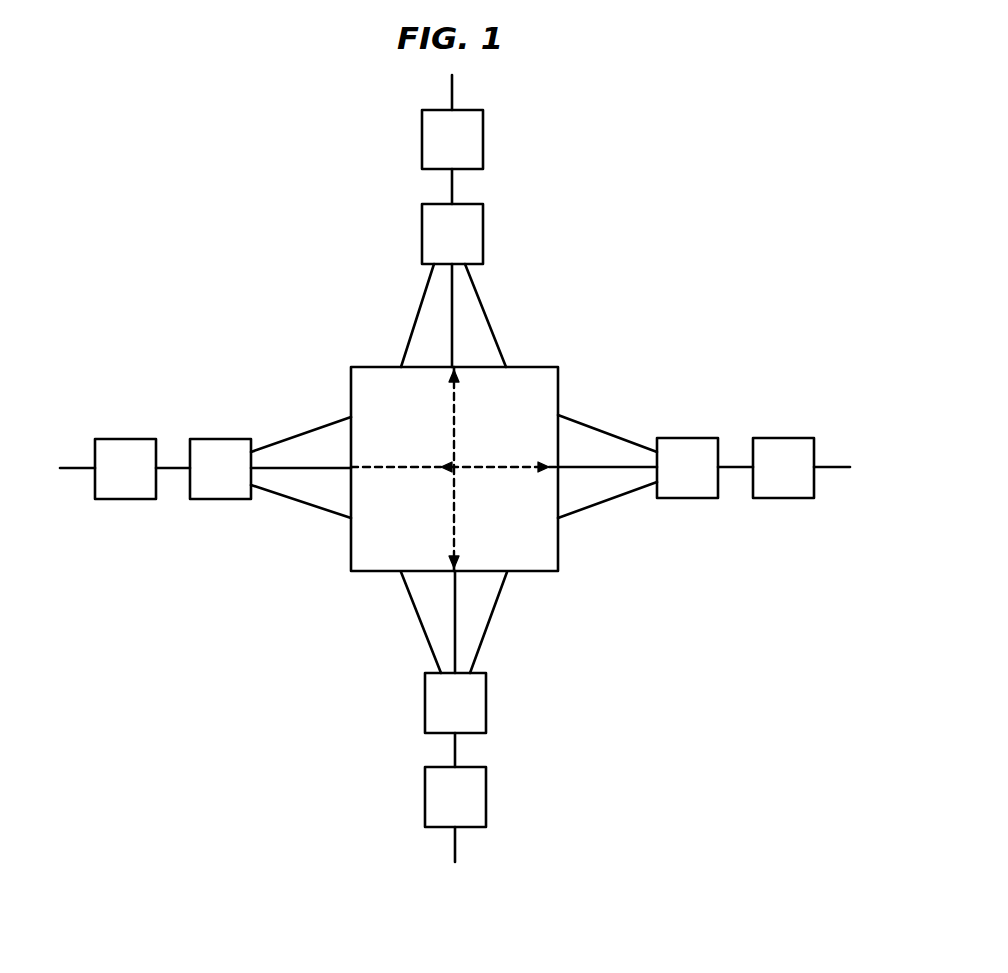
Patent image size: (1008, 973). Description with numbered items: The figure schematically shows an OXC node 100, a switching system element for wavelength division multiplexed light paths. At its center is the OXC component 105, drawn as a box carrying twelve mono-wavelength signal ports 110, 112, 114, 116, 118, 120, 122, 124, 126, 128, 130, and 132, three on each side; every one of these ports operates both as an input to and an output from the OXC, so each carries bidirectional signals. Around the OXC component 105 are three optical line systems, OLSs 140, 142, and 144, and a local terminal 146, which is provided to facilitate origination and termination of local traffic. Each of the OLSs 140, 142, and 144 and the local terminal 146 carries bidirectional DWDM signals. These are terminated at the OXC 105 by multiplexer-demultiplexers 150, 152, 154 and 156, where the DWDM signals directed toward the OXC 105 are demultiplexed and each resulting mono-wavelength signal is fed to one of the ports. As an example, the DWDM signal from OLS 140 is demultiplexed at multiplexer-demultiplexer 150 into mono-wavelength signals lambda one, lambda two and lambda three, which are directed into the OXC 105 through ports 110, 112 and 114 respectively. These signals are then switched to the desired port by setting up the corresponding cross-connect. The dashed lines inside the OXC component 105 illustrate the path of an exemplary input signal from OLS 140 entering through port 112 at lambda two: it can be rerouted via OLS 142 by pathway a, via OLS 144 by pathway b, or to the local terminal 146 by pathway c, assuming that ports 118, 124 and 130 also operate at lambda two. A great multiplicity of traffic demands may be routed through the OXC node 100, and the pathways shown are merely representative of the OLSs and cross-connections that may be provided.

The OXC node 100 is at (680, 192).
The OXC component 105 is at (350, 372).
The mono-wavelength signal port 110 is at (348, 415).
The mono-wavelength signal port 112 is at (344, 472).
The mono-wavelength signal port 114 is at (348, 520).
The mono-wavelength signal port 116 is at (401, 574).
The mono-wavelength signal port 118 is at (450, 575).
The mono-wavelength signal port 120 is at (510, 574).
The mono-wavelength signal port 122 is at (561, 520).
The mono-wavelength signal port 124 is at (566, 470).
The mono-wavelength signal port 126 is at (561, 414).
The mono-wavelength signal port 128 is at (507, 366).
The mono-wavelength signal port 130 is at (456, 365).
The mono-wavelength signal port 132 is at (400, 366).
The OLS 140 is at (128, 499).
The OLS 142 is at (486, 801).
The OLS 144 is at (786, 498).
The local terminal 146 is at (483, 142).
The multiplexer-demultiplexer 150 is at (219, 439).
The multiplexer-demultiplexer 152 is at (486, 706).
The multiplexer-demultiplexer 154 is at (690, 498).
The multiplexer-demultiplexer 156 is at (483, 238).
The pathway a is at (455, 522).
The pathway b is at (500, 466).
The pathway c is at (455, 430).